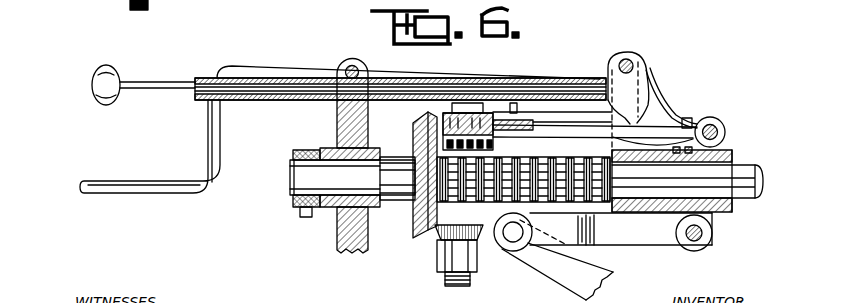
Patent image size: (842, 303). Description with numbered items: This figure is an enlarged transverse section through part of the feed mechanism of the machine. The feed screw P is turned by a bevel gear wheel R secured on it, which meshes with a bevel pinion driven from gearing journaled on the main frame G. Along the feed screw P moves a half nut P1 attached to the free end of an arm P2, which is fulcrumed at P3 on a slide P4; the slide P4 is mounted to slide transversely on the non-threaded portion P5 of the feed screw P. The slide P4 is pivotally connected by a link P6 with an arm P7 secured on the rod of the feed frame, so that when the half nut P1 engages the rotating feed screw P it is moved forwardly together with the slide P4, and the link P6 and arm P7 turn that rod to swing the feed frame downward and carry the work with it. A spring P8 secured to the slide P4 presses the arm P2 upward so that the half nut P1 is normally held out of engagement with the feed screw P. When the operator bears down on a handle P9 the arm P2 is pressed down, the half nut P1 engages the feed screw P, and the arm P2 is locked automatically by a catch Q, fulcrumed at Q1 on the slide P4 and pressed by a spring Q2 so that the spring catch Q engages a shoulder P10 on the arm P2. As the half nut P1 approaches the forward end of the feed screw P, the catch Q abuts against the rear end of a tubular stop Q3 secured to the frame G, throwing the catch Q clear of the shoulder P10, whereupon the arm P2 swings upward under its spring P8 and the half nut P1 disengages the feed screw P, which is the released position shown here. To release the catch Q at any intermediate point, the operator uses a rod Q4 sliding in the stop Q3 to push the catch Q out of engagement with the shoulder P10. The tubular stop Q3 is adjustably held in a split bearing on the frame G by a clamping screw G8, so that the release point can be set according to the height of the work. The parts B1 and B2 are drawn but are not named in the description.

The rod Q4 is at (162, 89).
The tubular stop Q3 is at (553, 80).
The catch Q is at (608, 83).
The fulcrum Q1 is at (630, 58).
The spring Q2 is at (657, 94).
The clamping screw G8 is at (353, 66).
The frame G is at (338, 247).
The handle P9 is at (221, 160).
The bevel gear wheel R is at (413, 213).
The nut B1 is at (433, 246).
The stub B2 is at (451, 281).
The feed screw P is at (523, 192).
The half nut P1 is at (493, 140).
The arm P2 is at (552, 130).
The shoulder P10 is at (563, 124).
The spring P8 is at (632, 135).
The fulcrum P3 is at (722, 126).
The slide P4 is at (729, 212).
The non-threaded portion P5 is at (752, 168).
The link P6 is at (650, 245).
The arm P7 is at (560, 283).